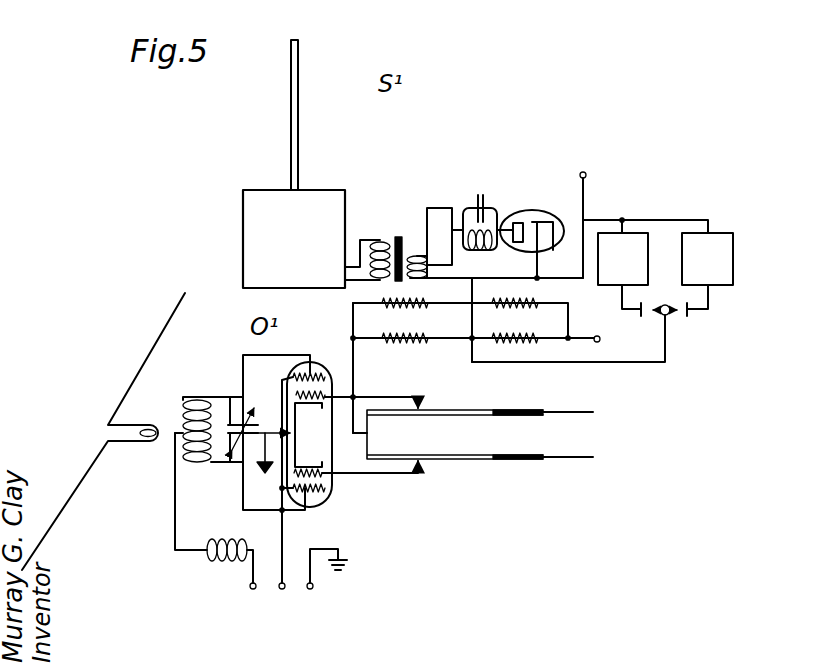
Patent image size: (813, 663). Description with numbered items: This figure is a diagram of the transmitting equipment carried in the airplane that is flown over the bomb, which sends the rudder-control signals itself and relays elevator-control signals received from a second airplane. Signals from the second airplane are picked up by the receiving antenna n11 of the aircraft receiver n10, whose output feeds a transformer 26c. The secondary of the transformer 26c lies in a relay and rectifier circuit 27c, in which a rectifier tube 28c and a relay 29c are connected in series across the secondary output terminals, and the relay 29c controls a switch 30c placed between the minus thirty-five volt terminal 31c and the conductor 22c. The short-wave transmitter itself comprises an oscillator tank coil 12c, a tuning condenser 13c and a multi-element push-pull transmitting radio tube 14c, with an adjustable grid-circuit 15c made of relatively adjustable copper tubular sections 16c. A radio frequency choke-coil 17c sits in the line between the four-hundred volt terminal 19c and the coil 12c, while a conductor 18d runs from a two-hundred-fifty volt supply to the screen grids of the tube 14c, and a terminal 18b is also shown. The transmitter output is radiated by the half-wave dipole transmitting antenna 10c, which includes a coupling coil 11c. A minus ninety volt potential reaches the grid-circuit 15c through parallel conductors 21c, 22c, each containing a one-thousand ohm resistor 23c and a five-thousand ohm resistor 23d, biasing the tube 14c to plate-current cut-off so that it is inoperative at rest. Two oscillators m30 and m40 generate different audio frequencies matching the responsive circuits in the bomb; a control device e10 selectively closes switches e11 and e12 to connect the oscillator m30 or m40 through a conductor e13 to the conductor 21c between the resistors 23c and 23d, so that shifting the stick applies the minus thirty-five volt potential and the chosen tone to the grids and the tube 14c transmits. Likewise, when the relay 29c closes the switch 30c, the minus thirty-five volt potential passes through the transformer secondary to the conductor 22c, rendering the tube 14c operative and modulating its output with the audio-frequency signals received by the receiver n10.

The receiving antenna n11 is at (300, 86).
The aircraft receiver n10 is at (346, 192).
The transformer 26c is at (406, 222).
The relay and rectifier circuit 27c is at (440, 207).
The rectifier tube 28c is at (555, 195).
The relay 29c is at (485, 228).
The switch 30c is at (456, 258).
The minus 35 volt potential terminal 31c is at (586, 172).
The oscillator m30 is at (634, 231).
The oscillator m40 is at (733, 235).
The control device e10 is at (668, 316).
The switch e11 is at (638, 317).
The switch e12 is at (690, 312).
The conductor e13 is at (668, 362).
The terminal 18b is at (607, 329).
The 1000 ohm resistor 23c is at (375, 369).
The 5000 ohm resistor 23d is at (525, 302).
The conductor 22c is at (478, 304).
The conductor 21c is at (457, 343).
The multi-element push-pull transmitting radio tube 14c is at (310, 354).
The tuning condenser 13c is at (230, 394).
The oscillator tank coil 12c is at (200, 465).
The coupling coil 11c is at (138, 447).
The dipole transmitting antenna 10c is at (70, 498).
The adjustable grid-circuit 15c is at (440, 465).
The adjustable copper tubular sections 16c is at (548, 417).
The radio frequency choke-coil 17c is at (222, 562).
The 400 volt terminal 19c is at (253, 590).
The conductor 18d is at (287, 608).